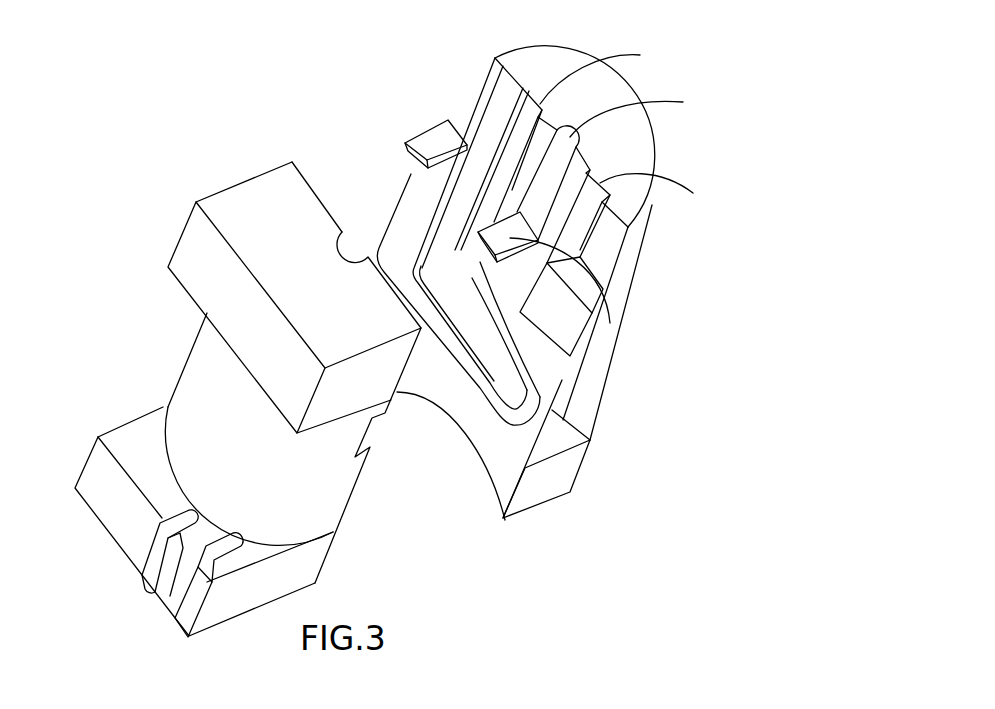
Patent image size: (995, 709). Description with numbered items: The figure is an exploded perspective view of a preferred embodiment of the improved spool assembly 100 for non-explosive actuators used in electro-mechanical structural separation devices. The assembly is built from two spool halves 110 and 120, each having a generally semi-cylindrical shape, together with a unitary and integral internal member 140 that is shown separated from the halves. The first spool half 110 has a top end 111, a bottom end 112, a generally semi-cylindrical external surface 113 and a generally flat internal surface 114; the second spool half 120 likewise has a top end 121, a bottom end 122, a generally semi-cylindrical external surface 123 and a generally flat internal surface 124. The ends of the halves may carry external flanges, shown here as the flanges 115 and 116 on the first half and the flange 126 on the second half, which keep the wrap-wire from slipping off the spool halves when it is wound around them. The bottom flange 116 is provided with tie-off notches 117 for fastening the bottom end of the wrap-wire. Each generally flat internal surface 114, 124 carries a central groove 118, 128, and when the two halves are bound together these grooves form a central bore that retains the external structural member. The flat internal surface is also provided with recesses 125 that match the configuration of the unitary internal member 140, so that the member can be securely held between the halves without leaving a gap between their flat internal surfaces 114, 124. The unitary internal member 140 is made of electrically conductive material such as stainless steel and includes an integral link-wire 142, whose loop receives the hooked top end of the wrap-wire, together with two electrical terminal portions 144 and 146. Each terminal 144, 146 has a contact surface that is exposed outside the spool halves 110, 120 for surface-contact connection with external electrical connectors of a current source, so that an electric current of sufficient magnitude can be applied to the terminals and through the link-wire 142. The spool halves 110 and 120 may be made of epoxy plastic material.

The spool assembly 100 is at (766, 152).
The spool half 110 is at (182, 246).
The top end 111 is at (248, 195).
The bottom end 112 is at (260, 615).
The generally semi-cylindrical external surface 113 is at (240, 378).
The generally flat internal surface 114 is at (308, 172).
The external flange 115 is at (233, 302).
The bottom flange 116 is at (110, 497).
The tie-off notches 117 is at (178, 610).
The central groove 118 is at (357, 257).
The spool half 120 is at (649, 266).
The top end 121 is at (568, 62).
The bottom end 122 is at (510, 523).
The generally semi-cylindrical external surface 123 is at (587, 380).
The generally flat internal surface 124 is at (483, 95).
The recesses 125 is at (640, 55).
The external flange 126 is at (543, 490).
The central groove 128 is at (683, 102).
The unitary internal member 140 is at (402, 120).
The link-wire 142 is at (545, 436).
The electrical terminal portion 144 is at (437, 132).
The electrical terminal portion 146 is at (606, 322).